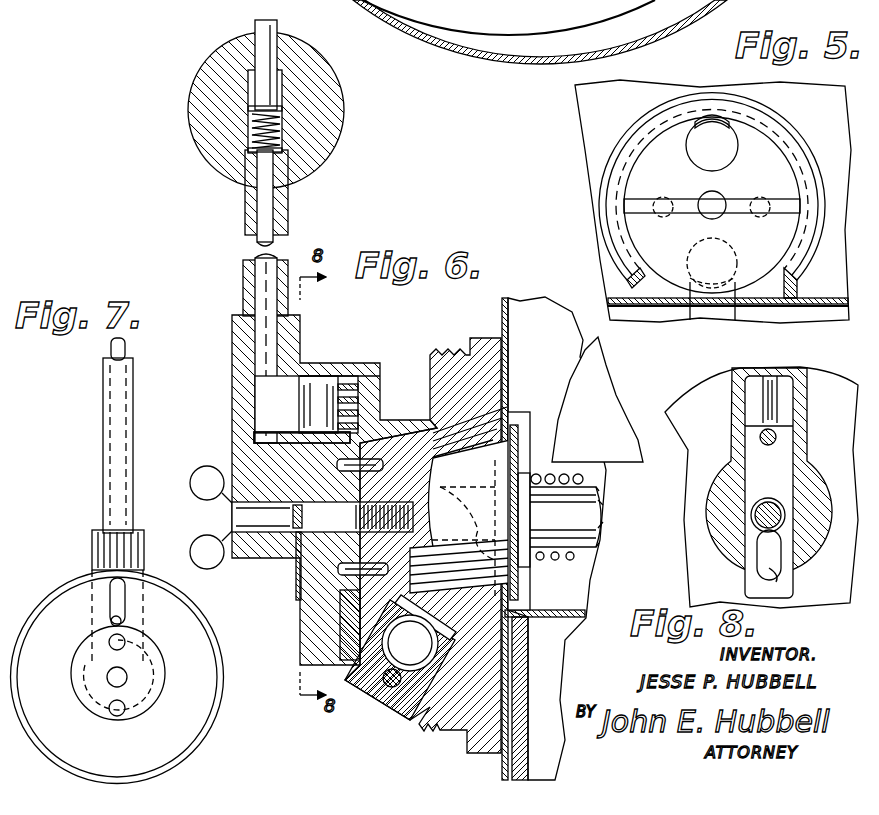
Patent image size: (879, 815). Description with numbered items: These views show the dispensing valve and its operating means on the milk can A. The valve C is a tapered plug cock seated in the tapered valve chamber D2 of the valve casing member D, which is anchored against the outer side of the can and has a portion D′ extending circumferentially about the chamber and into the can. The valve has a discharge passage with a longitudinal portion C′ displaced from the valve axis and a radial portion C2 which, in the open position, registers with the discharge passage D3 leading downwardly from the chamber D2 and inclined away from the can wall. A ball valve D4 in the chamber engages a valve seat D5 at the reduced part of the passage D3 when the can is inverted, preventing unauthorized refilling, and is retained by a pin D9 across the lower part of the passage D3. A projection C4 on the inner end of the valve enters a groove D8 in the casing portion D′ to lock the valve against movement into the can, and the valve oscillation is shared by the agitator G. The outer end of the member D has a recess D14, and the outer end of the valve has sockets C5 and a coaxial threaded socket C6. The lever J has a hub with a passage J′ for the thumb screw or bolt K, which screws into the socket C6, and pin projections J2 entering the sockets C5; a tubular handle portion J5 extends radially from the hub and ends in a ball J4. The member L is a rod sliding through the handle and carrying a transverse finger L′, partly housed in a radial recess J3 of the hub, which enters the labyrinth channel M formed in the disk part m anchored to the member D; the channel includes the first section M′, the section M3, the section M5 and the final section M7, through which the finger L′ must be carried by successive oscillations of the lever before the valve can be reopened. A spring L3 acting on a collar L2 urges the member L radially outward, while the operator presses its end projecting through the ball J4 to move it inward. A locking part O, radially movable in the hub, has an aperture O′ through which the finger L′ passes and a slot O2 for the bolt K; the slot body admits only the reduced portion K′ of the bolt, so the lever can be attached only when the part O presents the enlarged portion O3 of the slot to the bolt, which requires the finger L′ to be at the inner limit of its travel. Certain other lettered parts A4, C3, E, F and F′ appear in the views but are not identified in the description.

In FIG. 5, the can A is at (658, 92).
In FIG. 6, the can A is at (502, 328).
In FIG. 5, the base plate A4 is at (755, 308).
In FIG. 6, the base plate A4 is at (586, 614).
In FIG. 5, the valve C is at (765, 140).
In FIG. 6, the valve C is at (512, 438).
In FIG. 5, the longitudinal portion of discharge passage C′ is at (738, 118).
In FIG. 6, the longitudinal portion of discharge passage C′ is at (533, 582).
In FIG. 5, the radial portion of discharge passage C2 is at (708, 118).
In FIG. 6, the radial portion of discharge passage C2 is at (463, 530).
In FIG. 5, the ring C3 is at (782, 232).
In FIG. 6, the ring C3 is at (500, 452).
In FIG. 5, the projection C4 is at (655, 150).
In FIG. 6, the projection C4 is at (512, 448).
In FIG. 5, the socket C5 is at (765, 200).
In FIG. 6, the socket C5 is at (372, 459).
In FIG. 5, the threaded socket C6 is at (700, 218).
In FIG. 6, the threaded socket C6 is at (345, 575).
In FIG. 6, the valve casing member D is at (450, 730).
In FIG. 5, the casing portion D′ is at (590, 148).
In FIG. 6, the casing portion D′ is at (512, 410).
In FIG. 6, the valve chamber D2 is at (442, 425).
In FIG. 5, the discharge passage D3 is at (695, 310).
In FIG. 6, the discharge passage D3 is at (405, 705).
In FIG. 6, the ball valve D4 is at (410, 643).
In FIG. 6, the valve seat D5 is at (528, 648).
In FIG. 5, the groove D8 is at (606, 183).
In FIG. 6, the groove D8 is at (522, 414).
In FIG. 6, the pin D9 is at (388, 688).
In FIG. 6, the recess D14 is at (340, 598).
In FIG. 6, the spring E is at (586, 476).
In FIG. 6, the shaft F is at (596, 518).
In FIG. 6, the shaft spring F′ is at (600, 536).
In FIG. 6, the agitator G is at (612, 398).
In FIG. 7, the lever J is at (190, 725).
In FIG. 6, the lever J is at (232, 385).
In FIG. 8, the lever J is at (706, 530).
In FIG. 6, the passage J′ is at (300, 443).
In FIG. 7, the pin projections J2 is at (125, 706).
In FIG. 6, the pin projections J2 is at (270, 462).
In FIG. 7, the recess J3 is at (110, 588).
In FIG. 6, the recess J3 is at (318, 432).
In FIG. 8, the recess J3 is at (778, 390).
In FIG. 6, the ball J4 is at (344, 120).
In FIG. 7, the tubular handle portion J5 is at (105, 441).
In FIG. 6, the tubular handle portion J5 is at (246, 230).
In FIG. 6, the thumb screw K is at (232, 516).
In FIG. 8, the thumb screw K is at (782, 510).
In FIG. 6, the reduced portion of bolt K′ is at (293, 520).
In FIG. 8, the reduced portion of bolt K′ is at (768, 498).
In FIG. 7, the member L is at (126, 345).
In FIG. 6, the member L is at (255, 278).
In FIG. 7, the finger L′ is at (112, 620).
In FIG. 6, the finger L′ is at (325, 376).
In FIG. 8, the finger L′ is at (777, 437).
In FIG. 6, the collar L2 is at (248, 108).
In FIG. 6, the spring L3 is at (252, 140).
In FIG. 6, the labyrinth channel M is at (347, 384).
In FIG. 6, the first labyrinth section M′ is at (370, 425).
In FIG. 6, the labyrinth section M3 is at (360, 412).
In FIG. 6, the labyrinth section M5 is at (356, 398).
In FIG. 6, the labyrinth channel section M7 is at (352, 376).
In FIG. 6, the disk part m is at (340, 615).
In FIG. 6, the locking part O is at (296, 592).
In FIG. 8, the locking part O is at (755, 452).
In FIG. 8, the aperture O′ is at (762, 432).
In FIG. 6, the slot O2 is at (296, 580).
In FIG. 8, the slot O2 is at (782, 578).
In FIG. 8, the enlarged portion of slot O3 is at (754, 510).